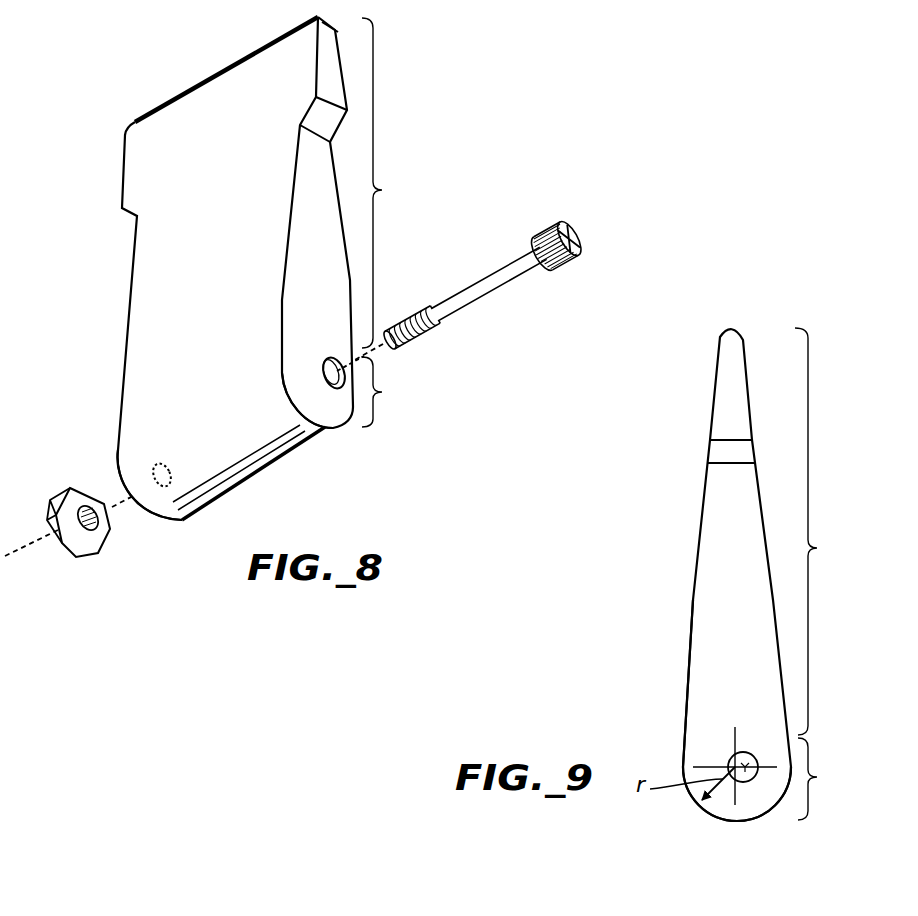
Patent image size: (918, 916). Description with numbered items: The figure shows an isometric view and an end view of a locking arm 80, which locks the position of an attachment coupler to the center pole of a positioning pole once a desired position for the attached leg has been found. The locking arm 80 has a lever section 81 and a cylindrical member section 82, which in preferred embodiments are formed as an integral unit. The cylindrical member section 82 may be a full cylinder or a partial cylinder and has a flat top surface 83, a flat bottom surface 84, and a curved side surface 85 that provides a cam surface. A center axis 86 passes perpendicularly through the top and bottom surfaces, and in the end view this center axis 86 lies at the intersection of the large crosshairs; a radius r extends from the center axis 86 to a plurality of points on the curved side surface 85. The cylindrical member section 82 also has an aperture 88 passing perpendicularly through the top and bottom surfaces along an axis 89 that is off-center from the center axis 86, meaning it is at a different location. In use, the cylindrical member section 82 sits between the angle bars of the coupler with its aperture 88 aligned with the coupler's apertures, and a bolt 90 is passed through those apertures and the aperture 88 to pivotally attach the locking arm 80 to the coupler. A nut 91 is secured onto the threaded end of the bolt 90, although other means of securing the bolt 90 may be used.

In FIG. 8, the locking arm 80 is at (155, 88).
In FIG. 9, the locking arm 80 is at (675, 532).
In FIG. 8, the lever section 81 is at (391, 183).
In FIG. 9, the lever section 81 is at (826, 531).
In FIG. 8, the cylindrical member section 82 is at (391, 392).
In FIG. 9, the cylindrical member section 82 is at (829, 779).
In FIG. 8, the flat top surface 83 is at (310, 397).
In FIG. 9, the flat top surface 83 is at (684, 710).
In FIG. 8, the flat bottom surface 84 is at (137, 503).
In FIG. 8, the curved side surface 85 is at (255, 425).
In FIG. 9, the curved side surface 85 is at (760, 821).
In FIG. 9, the center axis 86 is at (727, 759).
In FIG. 8, the aperture 88 is at (332, 392).
In FIG. 9, the aperture 88 is at (755, 782).
In FIG. 9, the axis 89 is at (752, 750).
In FIG. 8, the bolt 90 is at (455, 317).
In FIG. 8, the nut 91 is at (85, 490).